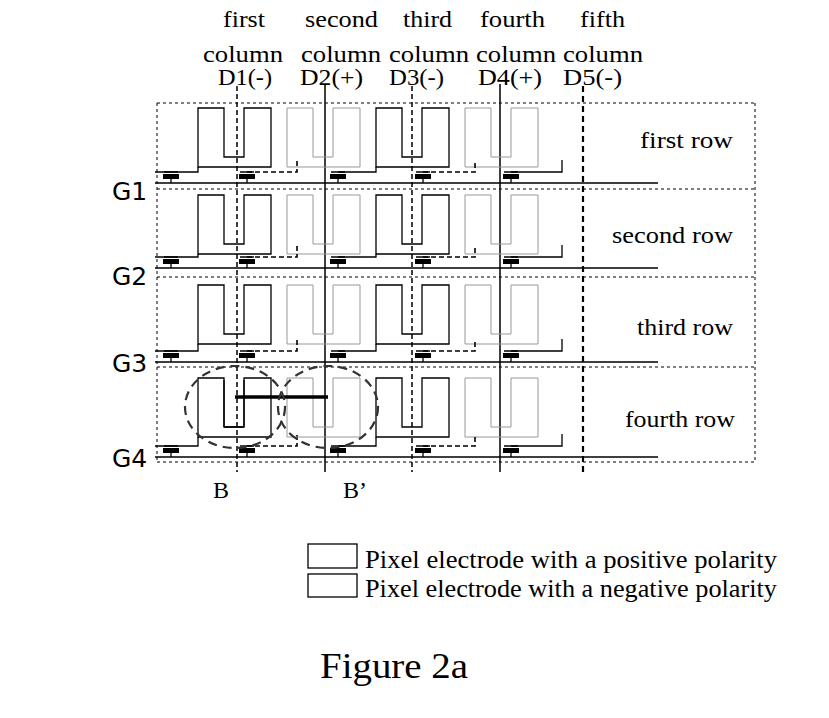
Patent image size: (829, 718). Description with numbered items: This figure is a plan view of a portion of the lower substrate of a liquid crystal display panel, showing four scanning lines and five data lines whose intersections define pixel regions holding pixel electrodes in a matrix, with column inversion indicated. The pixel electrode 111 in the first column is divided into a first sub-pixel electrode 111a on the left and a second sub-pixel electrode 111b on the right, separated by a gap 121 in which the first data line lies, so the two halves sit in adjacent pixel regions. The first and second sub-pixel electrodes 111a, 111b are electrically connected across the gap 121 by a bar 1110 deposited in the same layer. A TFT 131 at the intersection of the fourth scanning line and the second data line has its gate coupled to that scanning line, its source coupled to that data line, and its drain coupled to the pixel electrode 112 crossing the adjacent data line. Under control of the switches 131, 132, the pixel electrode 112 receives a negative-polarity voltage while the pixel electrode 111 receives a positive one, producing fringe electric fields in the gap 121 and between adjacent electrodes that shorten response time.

The pixel electrode 111 is at (198, 435).
The first sub-pixel electrode 111a is at (205, 404).
The second sub-pixel electrode 111b is at (267, 418).
The bar 1110 is at (235, 433).
The gap 121 is at (230, 415).
The pixel electrode 112 is at (363, 437).
The TFT 131 is at (255, 447).
The switch 132 is at (343, 447).